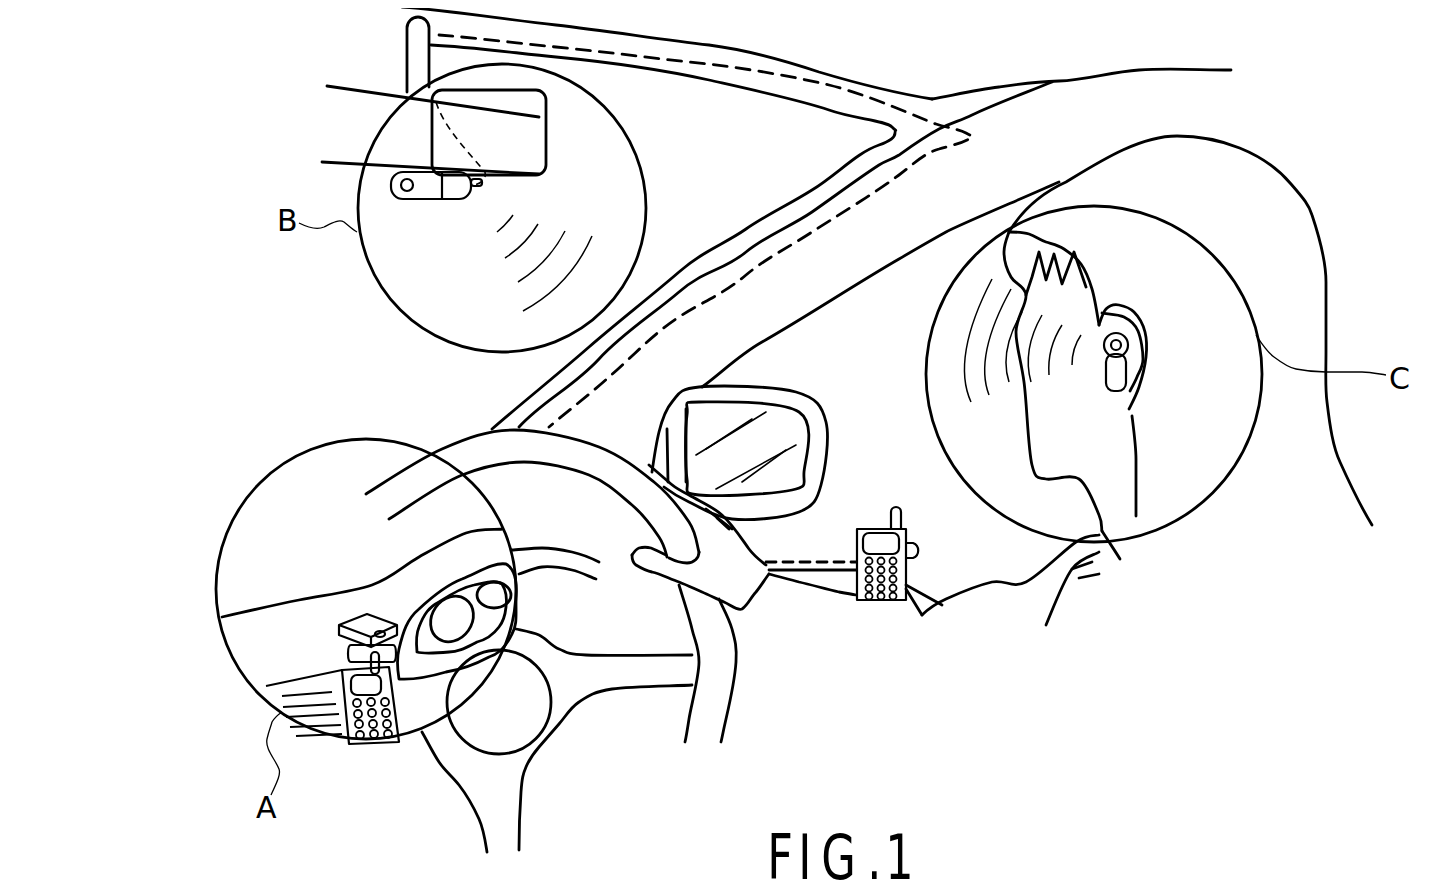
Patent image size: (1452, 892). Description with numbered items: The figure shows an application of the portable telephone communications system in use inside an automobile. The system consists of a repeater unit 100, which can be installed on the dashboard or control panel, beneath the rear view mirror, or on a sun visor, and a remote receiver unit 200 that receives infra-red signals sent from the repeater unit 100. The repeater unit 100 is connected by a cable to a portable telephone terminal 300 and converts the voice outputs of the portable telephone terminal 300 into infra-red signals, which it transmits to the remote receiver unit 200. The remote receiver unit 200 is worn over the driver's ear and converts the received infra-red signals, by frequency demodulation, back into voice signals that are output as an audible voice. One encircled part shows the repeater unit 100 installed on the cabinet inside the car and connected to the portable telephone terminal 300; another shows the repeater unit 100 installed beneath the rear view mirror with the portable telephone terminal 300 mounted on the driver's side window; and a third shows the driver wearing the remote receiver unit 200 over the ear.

The repeater unit 100 is at (417, 196).
The remote receiver unit 200 is at (1113, 367).
The portable telephone terminal 300 is at (867, 520).